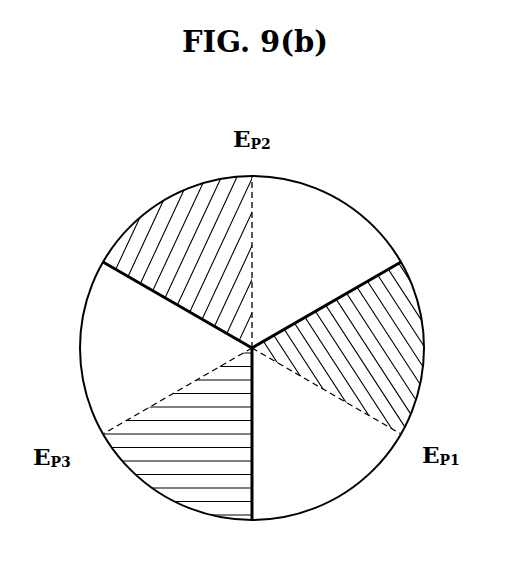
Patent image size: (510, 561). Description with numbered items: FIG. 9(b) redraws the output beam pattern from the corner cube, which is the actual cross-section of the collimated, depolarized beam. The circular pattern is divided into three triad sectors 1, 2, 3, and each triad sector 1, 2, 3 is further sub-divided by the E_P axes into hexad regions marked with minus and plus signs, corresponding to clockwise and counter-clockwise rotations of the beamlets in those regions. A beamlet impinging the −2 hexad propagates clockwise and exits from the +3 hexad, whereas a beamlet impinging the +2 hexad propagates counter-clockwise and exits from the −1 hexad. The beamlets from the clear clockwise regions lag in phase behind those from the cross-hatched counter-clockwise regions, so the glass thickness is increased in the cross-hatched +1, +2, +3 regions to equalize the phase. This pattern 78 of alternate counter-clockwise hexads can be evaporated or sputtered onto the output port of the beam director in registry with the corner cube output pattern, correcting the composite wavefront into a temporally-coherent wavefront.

The pattern of alternate CCW hexads 78 is at (373, 222).
The triad sector 1 is at (252, 348).
The triad sector 2 is at (252, 348).
The triad sector 3 is at (252, 347).